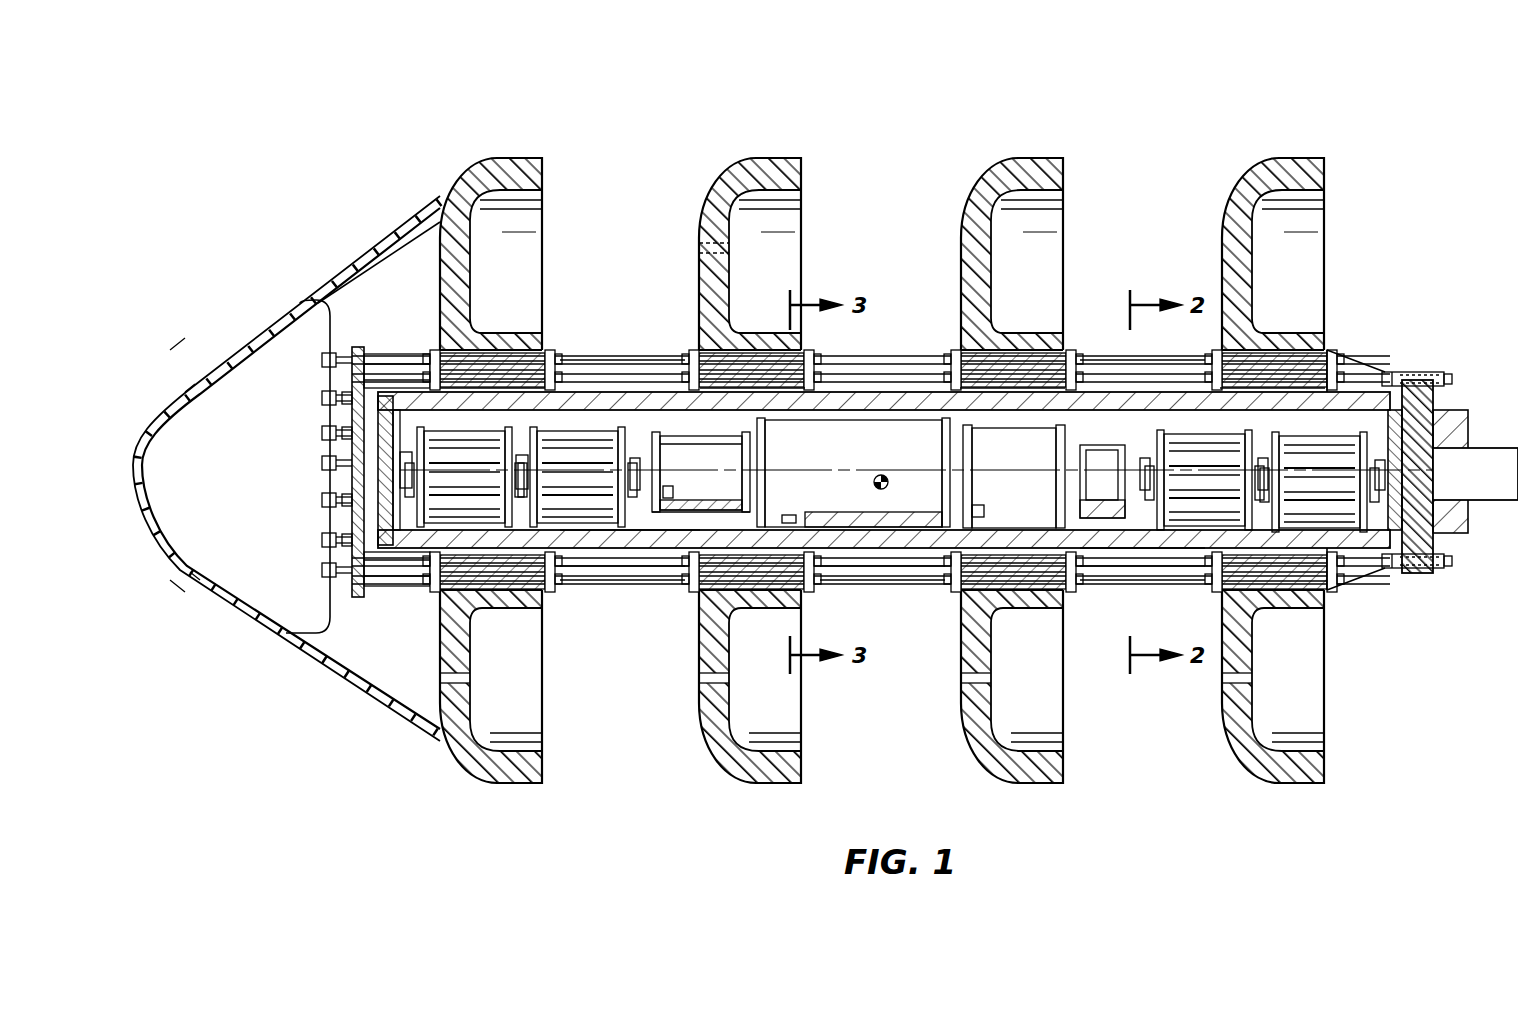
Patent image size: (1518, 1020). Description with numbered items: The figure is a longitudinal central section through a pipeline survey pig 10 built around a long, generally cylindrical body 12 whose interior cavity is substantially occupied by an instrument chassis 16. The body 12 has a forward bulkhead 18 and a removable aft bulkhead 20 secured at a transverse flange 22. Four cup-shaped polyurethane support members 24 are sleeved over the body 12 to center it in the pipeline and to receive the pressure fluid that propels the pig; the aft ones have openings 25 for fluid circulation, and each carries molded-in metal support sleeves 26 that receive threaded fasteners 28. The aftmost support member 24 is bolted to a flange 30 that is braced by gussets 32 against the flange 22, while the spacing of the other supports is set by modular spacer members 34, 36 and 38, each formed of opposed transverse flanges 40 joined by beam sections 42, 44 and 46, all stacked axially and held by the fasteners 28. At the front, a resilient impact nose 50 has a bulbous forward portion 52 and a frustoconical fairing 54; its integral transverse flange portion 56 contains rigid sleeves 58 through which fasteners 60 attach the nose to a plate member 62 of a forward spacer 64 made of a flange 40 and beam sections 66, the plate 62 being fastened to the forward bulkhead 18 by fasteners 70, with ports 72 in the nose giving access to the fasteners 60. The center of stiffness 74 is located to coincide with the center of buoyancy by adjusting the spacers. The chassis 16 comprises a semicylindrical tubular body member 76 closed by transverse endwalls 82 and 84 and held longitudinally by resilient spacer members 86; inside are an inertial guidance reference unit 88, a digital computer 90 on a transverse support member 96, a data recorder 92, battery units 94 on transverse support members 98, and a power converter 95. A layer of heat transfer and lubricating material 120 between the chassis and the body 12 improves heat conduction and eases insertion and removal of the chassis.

The survey pig 10 is at (1120, 166).
The body 12 is at (901, 385).
The instrument chassis 16 is at (915, 583).
The forward bulkhead 18 is at (380, 440).
The aft bulkhead 20 is at (1466, 422).
The transverse flange 22 is at (1412, 374).
The support member 24 is at (530, 158).
The openings 25 is at (716, 257).
The metal support sleeves 26 is at (519, 352).
The threaded fasteners 28 is at (764, 352).
The flange 30 is at (1392, 376).
The gussets 32 is at (1376, 366).
The spacer member 34 is at (1098, 590).
The spacer member 36 is at (845, 585).
The spacer member 38 is at (578, 586).
The transverse flanges 40 is at (430, 352).
The beam sections 42 is at (1148, 357).
The beam sections 44 is at (872, 357).
The beam sections 46 is at (600, 357).
The impact nose 50 is at (247, 638).
The bulbous forward portion 52 is at (164, 548).
The frustoconical fairing 54 is at (266, 300).
The transverse flange portion 56 is at (328, 337).
The sleeves 58 is at (353, 350).
The fasteners 60 is at (322, 364).
The plate member 62 is at (372, 568).
The forward spacer 64 is at (430, 592).
The beam sections 66 is at (398, 358).
The fasteners 70 is at (378, 500).
The ports 72 is at (196, 352).
The center of stiffness 74 is at (874, 483).
The tubular body member 76 is at (582, 548).
The transverse endwall 82 is at (454, 455).
The transverse endwall 84 is at (1390, 424).
The resilient spacer members 86 is at (390, 470).
The inertial guidance reference unit 88 is at (843, 449).
The digital computer 90 is at (686, 468).
The data recorder 92 is at (997, 449).
The battery units 94 is at (464, 454).
The power converter 95 is at (1105, 455).
The support member 96 is at (665, 514).
The support members 98 is at (633, 458).
The heat transfer and lubricating material 120 is at (1105, 548).